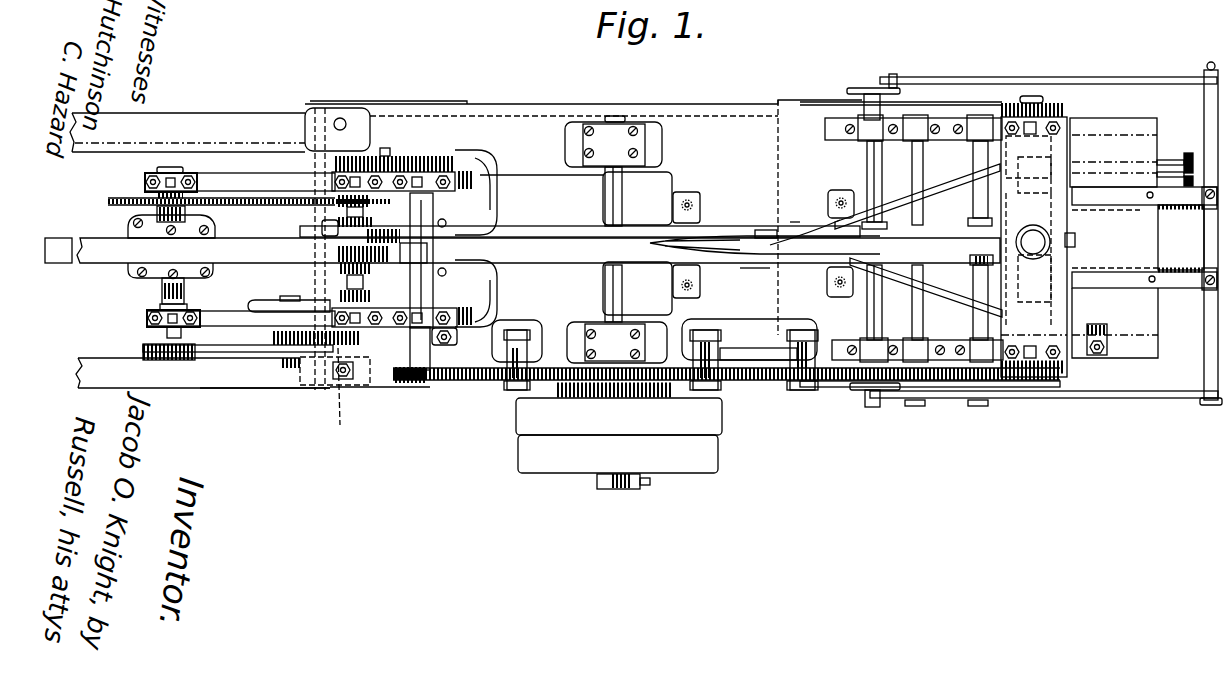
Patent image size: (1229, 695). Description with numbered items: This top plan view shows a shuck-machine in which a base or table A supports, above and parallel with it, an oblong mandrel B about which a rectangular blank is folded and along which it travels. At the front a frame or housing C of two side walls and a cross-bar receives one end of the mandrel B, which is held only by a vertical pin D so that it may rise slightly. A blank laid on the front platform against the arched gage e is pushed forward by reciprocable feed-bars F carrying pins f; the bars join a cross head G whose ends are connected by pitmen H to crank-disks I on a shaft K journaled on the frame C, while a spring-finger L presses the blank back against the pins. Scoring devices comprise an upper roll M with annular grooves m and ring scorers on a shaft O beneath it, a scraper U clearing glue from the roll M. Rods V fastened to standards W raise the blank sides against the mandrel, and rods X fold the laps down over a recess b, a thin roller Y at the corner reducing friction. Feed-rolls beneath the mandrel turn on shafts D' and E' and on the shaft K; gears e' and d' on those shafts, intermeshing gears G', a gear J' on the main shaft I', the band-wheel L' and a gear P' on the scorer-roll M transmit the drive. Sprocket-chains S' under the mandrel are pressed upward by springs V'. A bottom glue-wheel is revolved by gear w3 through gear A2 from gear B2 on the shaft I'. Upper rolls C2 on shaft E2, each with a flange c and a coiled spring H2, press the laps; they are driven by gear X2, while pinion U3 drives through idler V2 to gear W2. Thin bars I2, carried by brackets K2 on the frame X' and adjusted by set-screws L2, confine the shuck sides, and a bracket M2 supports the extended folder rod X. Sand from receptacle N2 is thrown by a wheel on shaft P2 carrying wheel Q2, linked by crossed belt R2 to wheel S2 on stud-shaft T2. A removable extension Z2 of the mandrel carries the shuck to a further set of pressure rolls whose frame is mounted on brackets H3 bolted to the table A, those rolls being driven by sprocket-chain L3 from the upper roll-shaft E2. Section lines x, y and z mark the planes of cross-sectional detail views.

The base or table A is at (651, 245).
The mandrel B is at (522, 248).
The frame or housing C is at (934, 118).
The vertical pin D is at (1009, 242).
The shaft E' is at (905, 240).
The reciprocable bars F is at (1137, 206).
The cross bar or head G is at (1181, 237).
The pitmen H is at (1076, 78).
The crank-disks I is at (873, 245).
The shaft K is at (867, 300).
The spring-finger L is at (1084, 246).
The upper scorer roll M is at (1050, 312).
The scorer and glue-wheel shaft O is at (1028, 378).
The scraper U is at (982, 188).
The rods or bars V is at (917, 194).
The springs V' is at (967, 272).
The shaft D' is at (970, 240).
The standards W is at (832, 190).
The lap-folding rods X is at (761, 264).
The roller or disk Y is at (766, 230).
The cavity or recess b is at (706, 238).
The annular flange c is at (381, 230).
The gage e is at (1105, 334).
The studs or pins f is at (1148, 192).
The annular grooves m is at (1038, 182).
The section line x x is at (760, 226).
The section line y y is at (345, 277).
The section line z z is at (442, 219).
The gear-wheel e' is at (916, 406).
The gear-wheel d' is at (978, 406).
The gear-wheel P' is at (930, 412).
The intermeshing gears G' is at (655, 366).
The gear-wheel J' is at (615, 408).
The band-wheel L' is at (619, 435).
The main shaft I' is at (613, 316).
The thin bars I2 is at (568, 218).
The gear-wheel B2 is at (608, 363).
The gear-wheel A2 is at (500, 383).
The gear-wheel w3 is at (415, 385).
The gear-wheel X2 is at (345, 382).
The stud-shaft T2 is at (300, 368).
The wheel S2 is at (274, 358).
The crossed belt R2 is at (217, 362).
The wheel Q2 is at (150, 362).
The shaft P2 is at (160, 298).
The box or receptacle N2 is at (128, 276).
The removable extension Z2 is at (66, 244).
The sprocket-chain L3 is at (222, 208).
The upper rolls C2 is at (326, 238).
The frame X' is at (240, 241).
The sprocket-chains S' is at (286, 299).
The shaft E2 is at (338, 258).
The coiled spring H2 is at (372, 292).
The brackets K2 is at (458, 224).
The set-screw L2 is at (445, 222).
The bracket M2 is at (430, 238).
The idler V2 is at (396, 157).
The gear-wheel W2 is at (456, 150).
The pinion U3 is at (318, 160).
The arms or brackets H3 is at (200, 250).